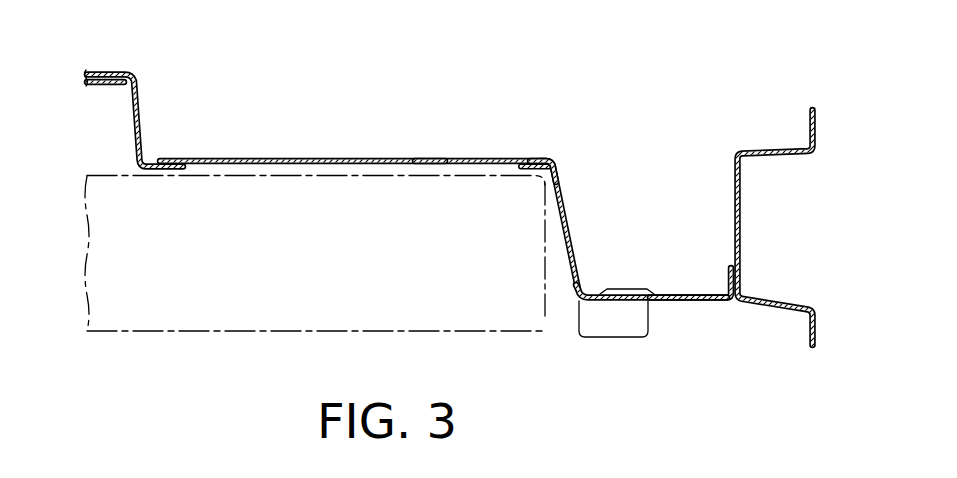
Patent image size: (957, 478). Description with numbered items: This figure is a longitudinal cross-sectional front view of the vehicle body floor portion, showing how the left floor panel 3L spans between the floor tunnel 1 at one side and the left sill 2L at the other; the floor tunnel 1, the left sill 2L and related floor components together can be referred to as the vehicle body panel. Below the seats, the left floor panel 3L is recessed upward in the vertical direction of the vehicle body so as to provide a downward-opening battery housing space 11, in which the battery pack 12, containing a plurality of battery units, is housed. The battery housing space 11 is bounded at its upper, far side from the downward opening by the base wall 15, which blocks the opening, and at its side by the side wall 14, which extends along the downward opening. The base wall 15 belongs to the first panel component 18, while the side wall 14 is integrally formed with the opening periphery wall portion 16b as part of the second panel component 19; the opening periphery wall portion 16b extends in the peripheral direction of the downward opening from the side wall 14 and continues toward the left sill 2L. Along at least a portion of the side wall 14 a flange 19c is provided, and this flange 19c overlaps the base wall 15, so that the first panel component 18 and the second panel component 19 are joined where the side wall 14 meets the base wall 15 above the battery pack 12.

The floor tunnel 1 is at (109, 73).
The battery pack 12 is at (104, 175).
The battery housing space 11 is at (556, 262).
The base wall 15 is at (372, 157).
The first panel component 18 is at (431, 152).
The flange 19c is at (531, 172).
The side wall 14 is at (575, 228).
The left floor panel 3L is at (569, 153).
The second panel component 19 is at (683, 308).
The opening periphery wall portion 16b is at (687, 293).
The left sill 2L is at (818, 320).